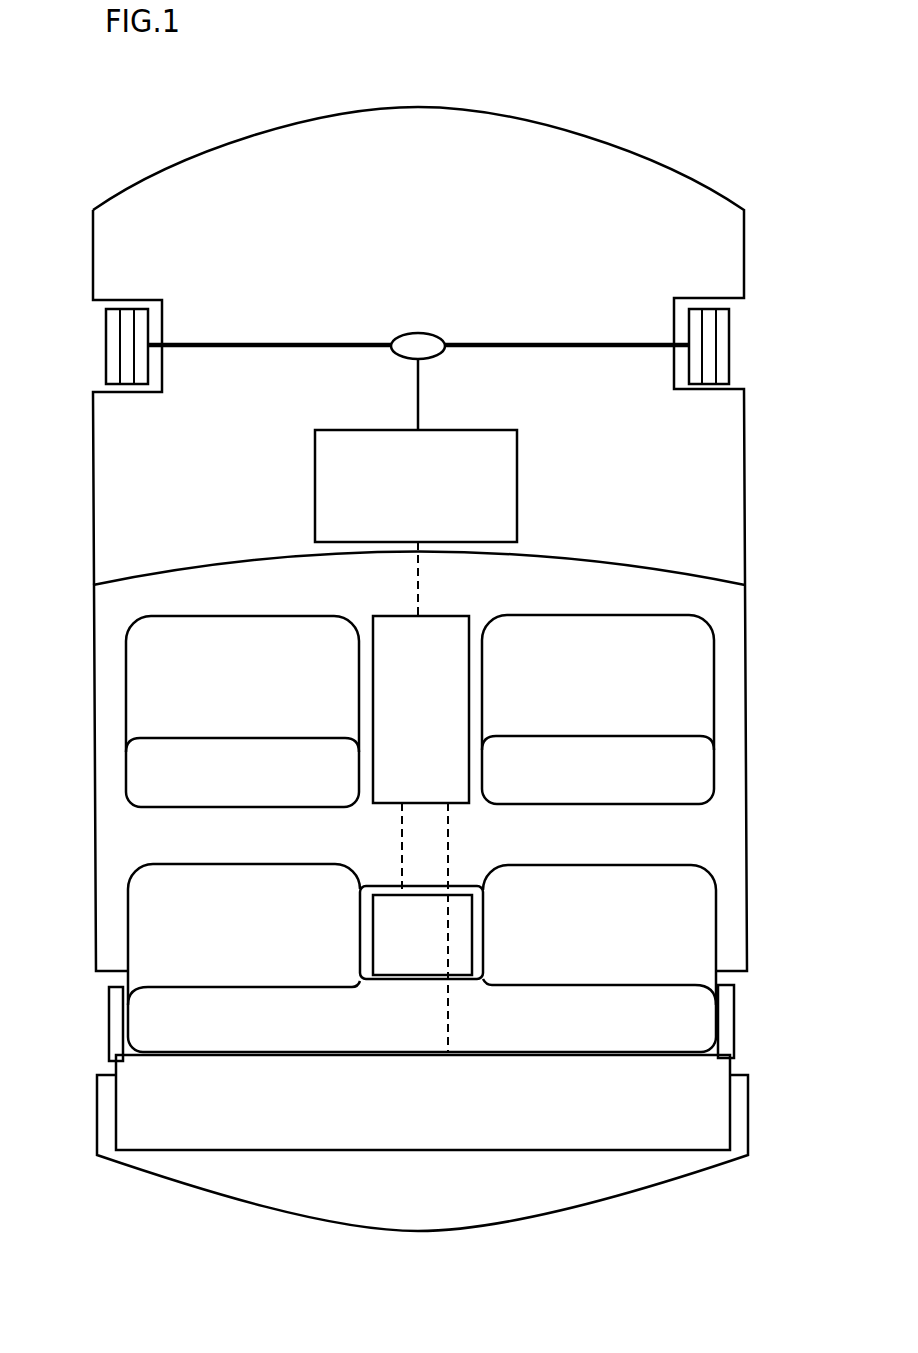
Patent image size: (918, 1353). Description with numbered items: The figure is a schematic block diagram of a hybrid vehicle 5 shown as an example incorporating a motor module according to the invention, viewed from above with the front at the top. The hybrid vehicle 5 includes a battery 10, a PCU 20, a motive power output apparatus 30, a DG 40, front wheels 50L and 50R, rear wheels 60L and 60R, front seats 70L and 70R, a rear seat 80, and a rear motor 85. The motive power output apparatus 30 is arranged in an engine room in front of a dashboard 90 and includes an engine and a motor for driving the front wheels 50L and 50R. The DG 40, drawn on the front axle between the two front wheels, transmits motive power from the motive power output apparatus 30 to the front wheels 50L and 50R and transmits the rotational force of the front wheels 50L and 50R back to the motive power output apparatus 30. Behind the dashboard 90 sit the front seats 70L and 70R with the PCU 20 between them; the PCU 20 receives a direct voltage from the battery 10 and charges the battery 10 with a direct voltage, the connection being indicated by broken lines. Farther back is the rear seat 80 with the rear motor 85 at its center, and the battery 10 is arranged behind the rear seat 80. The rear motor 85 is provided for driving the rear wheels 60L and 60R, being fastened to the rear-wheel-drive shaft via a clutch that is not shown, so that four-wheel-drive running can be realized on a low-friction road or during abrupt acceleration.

The hybrid vehicle 5 is at (402, 65).
The battery 10 is at (423, 1136).
The PCU (Power Control Unit) 20 is at (456, 626).
The motive power output apparatus 30 is at (460, 445).
The DG (Differential Gear) 40 is at (415, 331).
The front wheel 50L is at (113, 347).
The front wheel 50R is at (726, 343).
The rear wheel 60L is at (114, 1024).
The rear wheel 60R is at (727, 1022).
The front seat 70L is at (241, 626).
The front seat 70R is at (595, 626).
The rear seat 80 is at (243, 870).
The rear motor 85 is at (462, 977).
The dashboard 90 is at (660, 572).